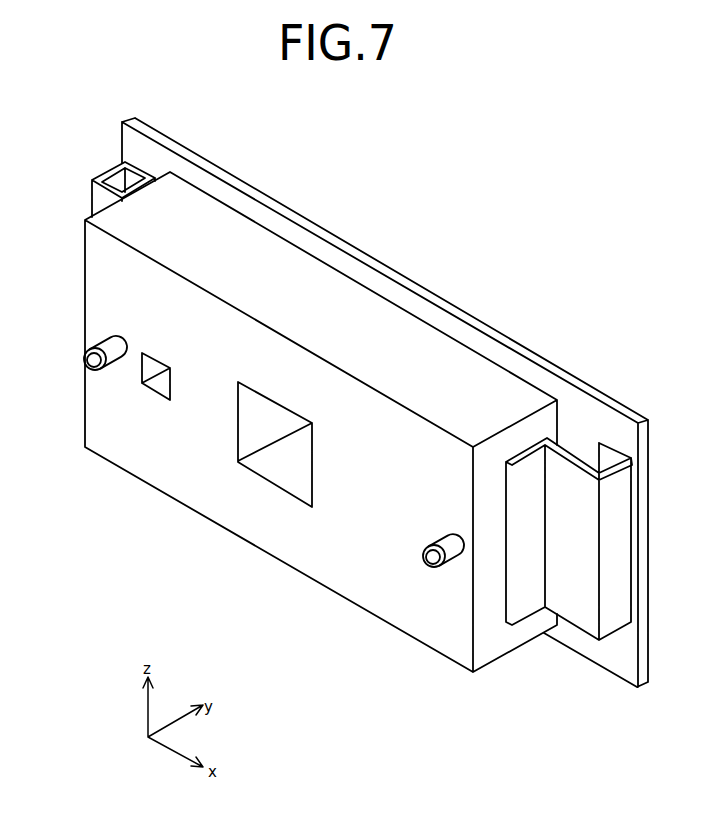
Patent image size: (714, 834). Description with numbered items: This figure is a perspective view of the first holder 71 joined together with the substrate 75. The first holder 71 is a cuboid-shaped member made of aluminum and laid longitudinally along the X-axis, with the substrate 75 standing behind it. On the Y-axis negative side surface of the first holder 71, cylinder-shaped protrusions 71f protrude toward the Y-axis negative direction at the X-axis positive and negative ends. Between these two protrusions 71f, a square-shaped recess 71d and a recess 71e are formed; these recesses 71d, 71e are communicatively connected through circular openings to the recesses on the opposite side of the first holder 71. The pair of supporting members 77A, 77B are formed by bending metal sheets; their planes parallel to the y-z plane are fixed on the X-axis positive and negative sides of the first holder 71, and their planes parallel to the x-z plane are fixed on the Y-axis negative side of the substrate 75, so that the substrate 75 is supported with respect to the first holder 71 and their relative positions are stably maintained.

The first holder 71 is at (414, 352).
The square-shaped recess 71d is at (285, 480).
The recess 71e is at (150, 386).
The cylinder-shaped protrusions 71f is at (90, 362).
The substrate 75 is at (310, 222).
The supporting member 77A is at (583, 613).
The supporting member 77B is at (105, 173).